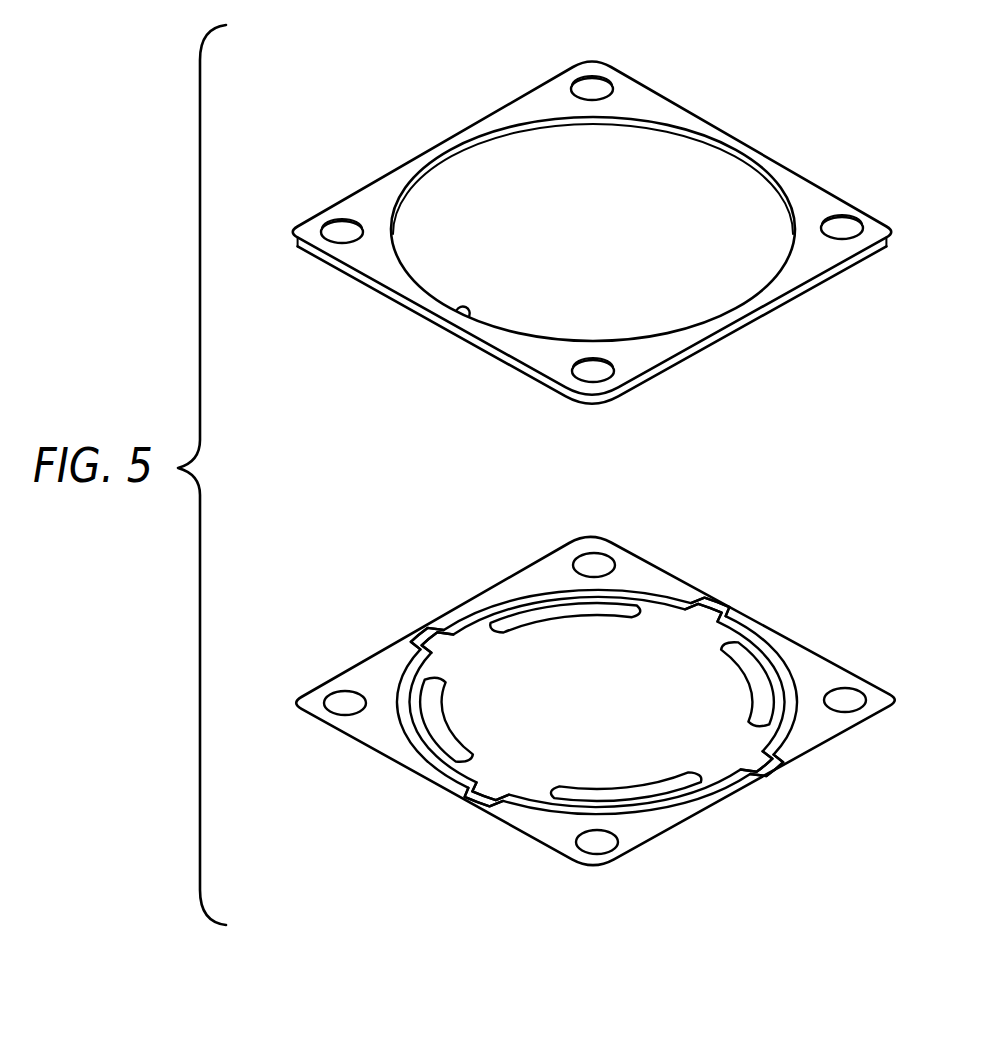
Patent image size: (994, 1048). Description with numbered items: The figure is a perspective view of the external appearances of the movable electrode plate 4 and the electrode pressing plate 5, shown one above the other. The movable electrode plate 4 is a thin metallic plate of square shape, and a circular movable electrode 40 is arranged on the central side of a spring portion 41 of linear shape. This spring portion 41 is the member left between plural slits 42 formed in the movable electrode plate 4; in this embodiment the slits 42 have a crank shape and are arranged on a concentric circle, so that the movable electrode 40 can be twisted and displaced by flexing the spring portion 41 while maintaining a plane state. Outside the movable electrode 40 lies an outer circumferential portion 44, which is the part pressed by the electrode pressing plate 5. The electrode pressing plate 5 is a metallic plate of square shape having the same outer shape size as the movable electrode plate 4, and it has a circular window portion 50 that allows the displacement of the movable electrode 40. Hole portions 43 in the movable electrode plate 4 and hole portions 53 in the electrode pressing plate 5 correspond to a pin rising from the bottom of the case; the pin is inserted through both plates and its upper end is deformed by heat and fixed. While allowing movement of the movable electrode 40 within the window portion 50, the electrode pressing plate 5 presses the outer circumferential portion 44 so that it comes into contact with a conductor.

The movable electrode plate 4 is at (350, 594).
The electrode pressing plate 5 is at (348, 125).
The movable electrode 40 is at (500, 625).
The spring portion 41 is at (515, 640).
The slits 42 is at (437, 637).
The hole portion 43 is at (595, 565).
The outer circumferential portion 44 is at (817, 732).
The window portion 50 is at (453, 312).
The hole portion 53 is at (590, 90).